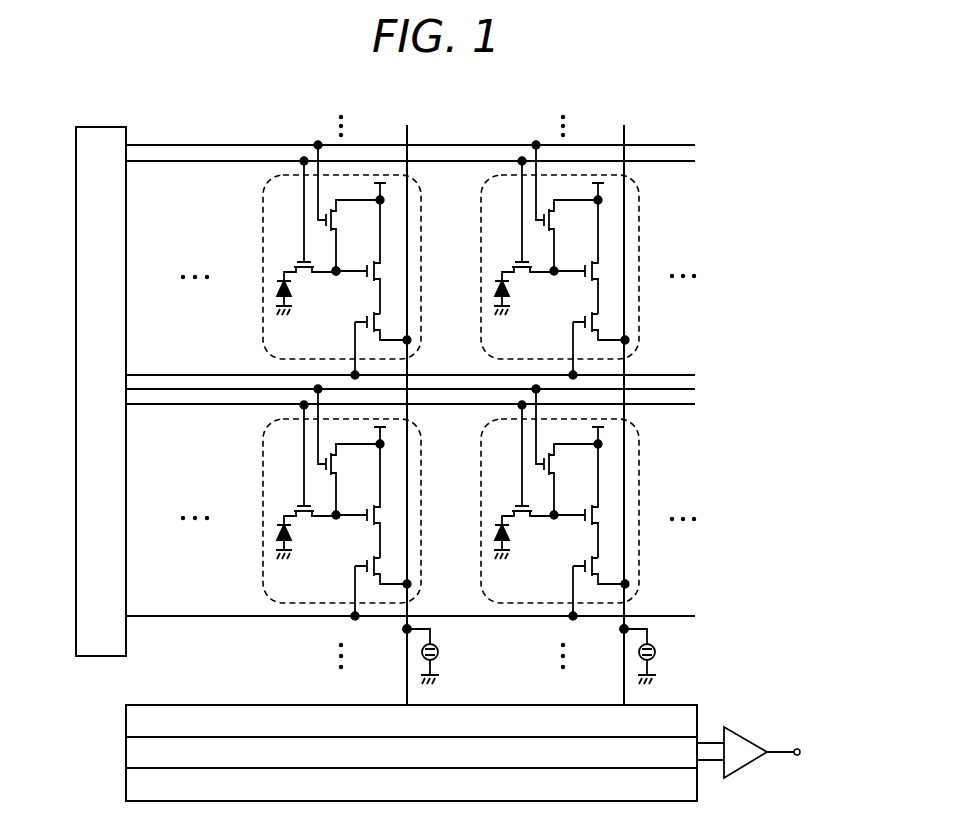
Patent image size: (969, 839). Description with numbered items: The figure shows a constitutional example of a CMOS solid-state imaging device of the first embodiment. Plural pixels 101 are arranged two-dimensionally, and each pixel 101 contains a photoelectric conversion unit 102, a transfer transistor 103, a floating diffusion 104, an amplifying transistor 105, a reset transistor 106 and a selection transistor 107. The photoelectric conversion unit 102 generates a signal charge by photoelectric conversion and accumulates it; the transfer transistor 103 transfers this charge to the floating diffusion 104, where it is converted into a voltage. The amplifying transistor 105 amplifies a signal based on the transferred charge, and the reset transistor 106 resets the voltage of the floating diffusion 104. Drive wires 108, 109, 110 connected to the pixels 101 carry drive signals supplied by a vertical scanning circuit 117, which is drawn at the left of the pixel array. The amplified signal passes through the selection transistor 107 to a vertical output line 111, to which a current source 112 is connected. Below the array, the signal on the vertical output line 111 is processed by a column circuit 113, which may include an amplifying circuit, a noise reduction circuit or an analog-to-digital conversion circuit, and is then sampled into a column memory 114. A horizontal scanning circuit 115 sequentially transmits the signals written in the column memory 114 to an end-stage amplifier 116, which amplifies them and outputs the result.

The pixel 101 is at (422, 218).
The photoelectric conversion unit 102 is at (277, 291).
The transfer transistor 103 is at (296, 263).
The floating diffusion 104 is at (337, 276).
The amplifying transistor 105 is at (377, 272).
The reset transistor 106 is at (324, 231).
The selection transistor 107 is at (377, 322).
The drive wire 108 is at (180, 162).
The drive wire 109 is at (199, 145).
The drive wire 110 is at (183, 375).
The vertical output line 111 is at (408, 367).
The current source 112 is at (439, 651).
The column circuit 113 is at (126, 714).
The column memory 114 is at (126, 750).
The horizontal scanning circuit 115 is at (126, 785).
The end-stage amplifier 116 is at (748, 737).
The vertical scanning circuit 117 is at (103, 127).